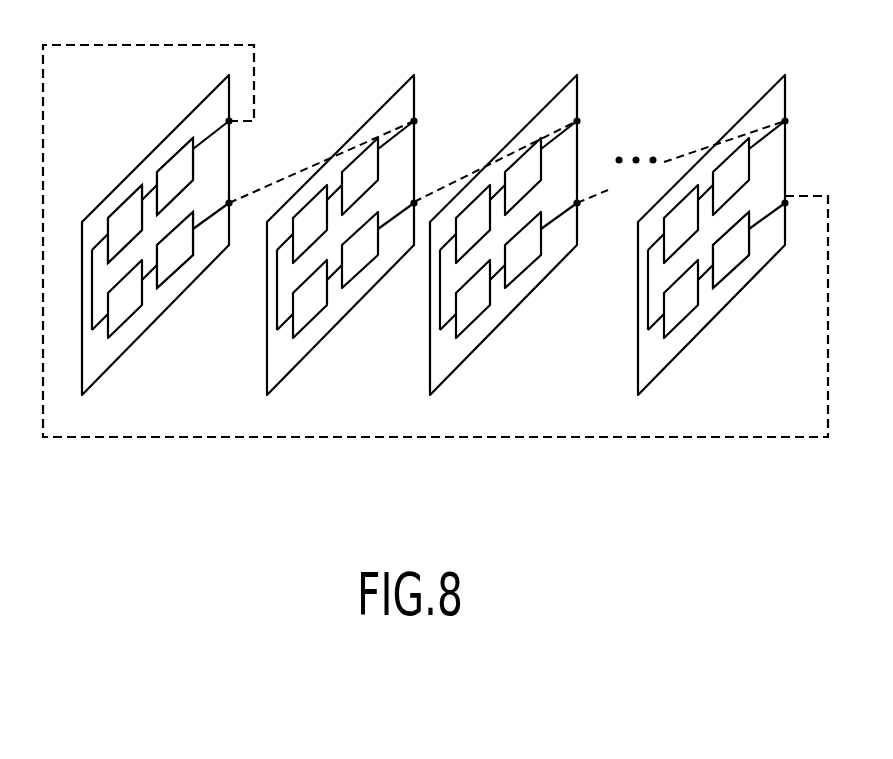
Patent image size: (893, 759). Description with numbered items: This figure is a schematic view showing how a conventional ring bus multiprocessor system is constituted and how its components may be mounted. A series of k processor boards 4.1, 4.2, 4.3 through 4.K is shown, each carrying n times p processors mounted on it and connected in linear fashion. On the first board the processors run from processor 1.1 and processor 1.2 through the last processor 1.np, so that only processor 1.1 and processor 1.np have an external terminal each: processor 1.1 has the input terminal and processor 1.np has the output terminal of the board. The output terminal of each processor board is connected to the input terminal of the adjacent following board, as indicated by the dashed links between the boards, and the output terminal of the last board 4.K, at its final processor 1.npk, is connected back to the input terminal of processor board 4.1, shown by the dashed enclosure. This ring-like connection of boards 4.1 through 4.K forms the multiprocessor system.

The processor 1.1 is at (178, 152).
The processor 1.2 is at (118, 206).
The processor 1.np is at (170, 278).
The processor 1.npk is at (742, 268).
The processor board 4.1 is at (120, 358).
The processor board 4.2 is at (290, 373).
The processor board 4.3 is at (470, 357).
The processor board 4.K is at (672, 363).